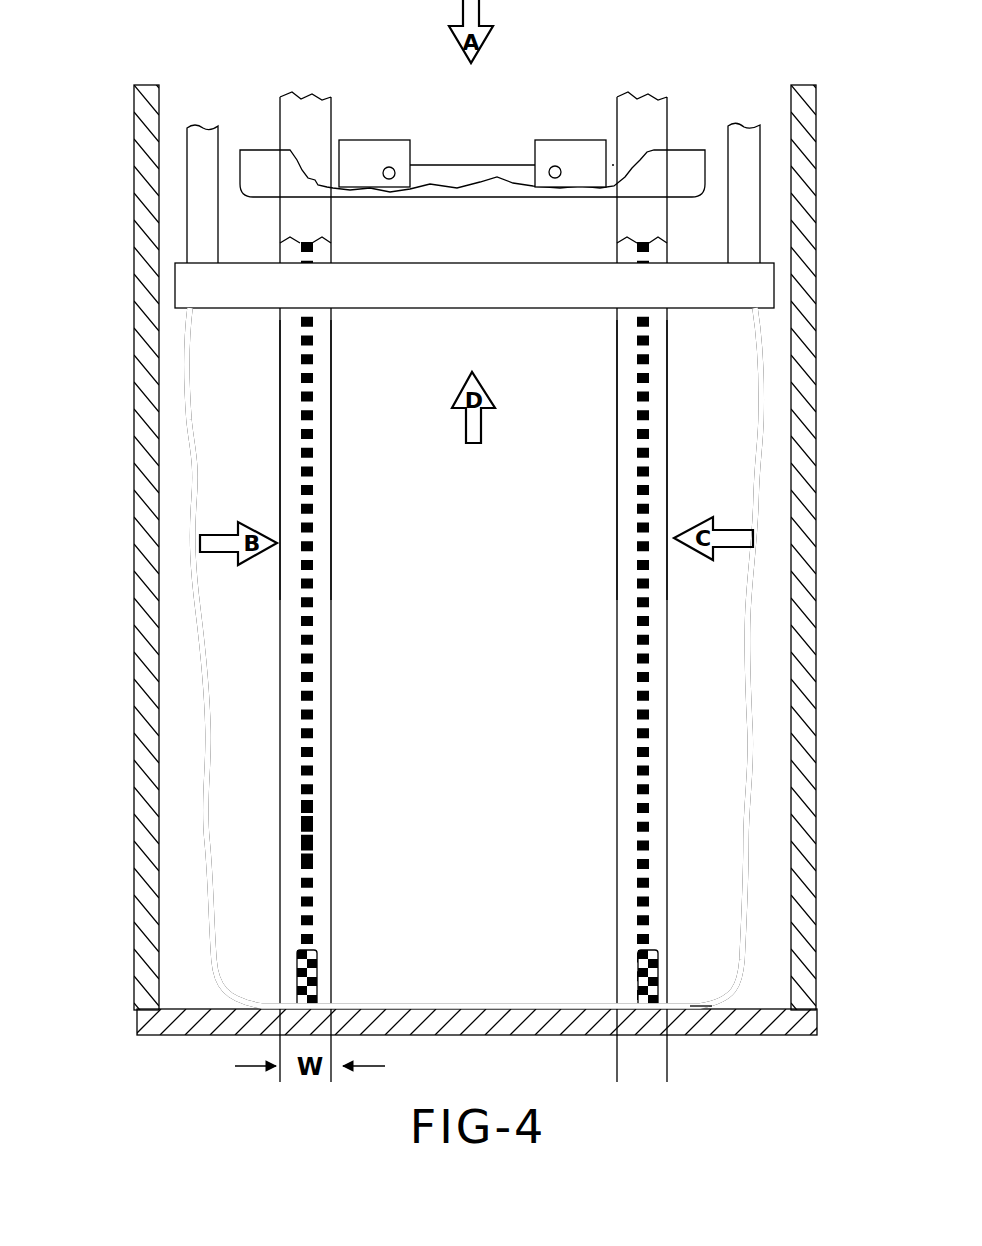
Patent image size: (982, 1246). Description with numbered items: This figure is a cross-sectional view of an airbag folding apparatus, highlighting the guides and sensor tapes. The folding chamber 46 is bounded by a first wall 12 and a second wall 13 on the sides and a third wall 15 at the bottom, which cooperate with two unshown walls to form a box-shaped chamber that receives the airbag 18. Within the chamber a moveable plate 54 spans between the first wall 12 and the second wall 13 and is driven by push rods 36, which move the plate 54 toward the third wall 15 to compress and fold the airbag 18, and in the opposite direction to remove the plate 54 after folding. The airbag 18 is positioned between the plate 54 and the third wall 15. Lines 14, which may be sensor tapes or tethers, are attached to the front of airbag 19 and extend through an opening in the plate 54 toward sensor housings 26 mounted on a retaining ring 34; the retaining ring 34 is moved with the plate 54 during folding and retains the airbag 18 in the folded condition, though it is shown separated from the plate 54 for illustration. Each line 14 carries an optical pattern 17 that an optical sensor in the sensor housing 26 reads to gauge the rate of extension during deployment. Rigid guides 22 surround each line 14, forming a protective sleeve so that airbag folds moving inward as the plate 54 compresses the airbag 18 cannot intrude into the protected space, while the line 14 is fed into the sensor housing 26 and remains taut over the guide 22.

The first wall 12 is at (152, 722).
The second wall 13 is at (802, 722).
The lines 14 is at (313, 740).
The third wall 15 is at (450, 1028).
The optical pattern 17 is at (312, 830).
The airbag 18 is at (758, 781).
The front of airbag 19 is at (707, 1013).
The guides 22 is at (296, 466).
The sensor housings 26 is at (374, 142).
The retaining ring 34 is at (460, 165).
The push rods 36 is at (200, 207).
The folding chamber 46 is at (475, 660).
The moveable plate 54 is at (742, 288).